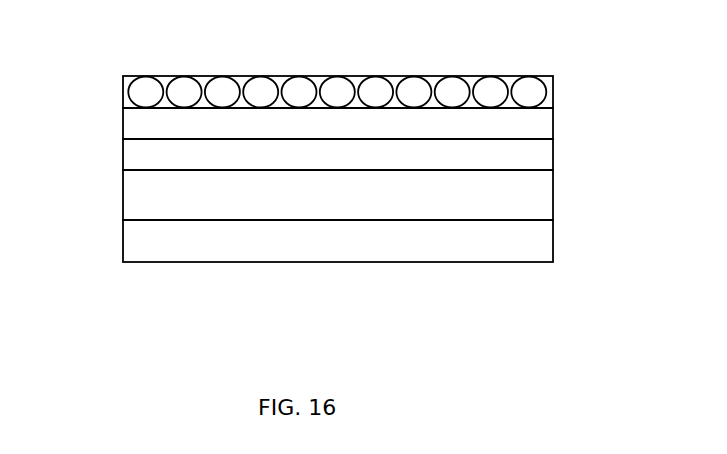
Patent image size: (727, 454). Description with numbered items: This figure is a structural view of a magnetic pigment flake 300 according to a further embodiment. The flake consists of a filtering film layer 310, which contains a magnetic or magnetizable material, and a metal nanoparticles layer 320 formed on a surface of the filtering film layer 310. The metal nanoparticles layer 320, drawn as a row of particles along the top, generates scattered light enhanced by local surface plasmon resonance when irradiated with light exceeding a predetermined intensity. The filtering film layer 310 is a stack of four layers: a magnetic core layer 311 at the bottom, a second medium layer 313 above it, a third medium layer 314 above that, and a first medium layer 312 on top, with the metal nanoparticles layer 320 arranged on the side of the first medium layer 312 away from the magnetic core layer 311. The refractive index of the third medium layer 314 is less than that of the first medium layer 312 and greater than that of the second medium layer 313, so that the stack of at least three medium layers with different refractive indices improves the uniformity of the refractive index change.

The magnetic pigment flake 300 is at (100, 64).
The filtering film layer 310 is at (414, 186).
The magnetic core layer 311 is at (374, 242).
The first medium layer 312 is at (553, 122).
The second medium layer 313 is at (553, 203).
The third medium layer 314 is at (553, 162).
The metal nanoparticles layer 320 is at (553, 84).